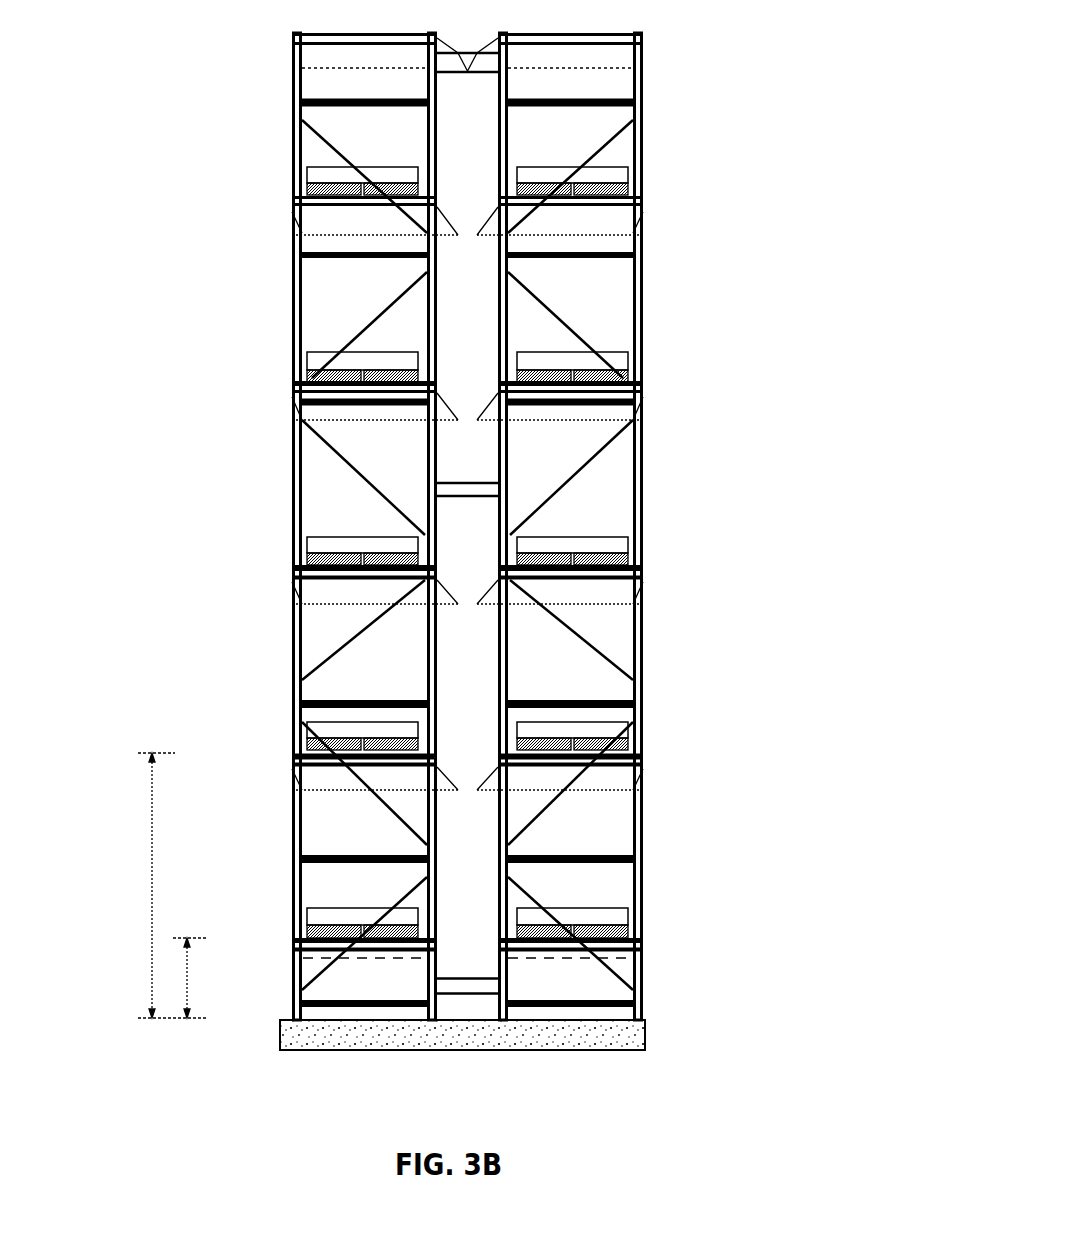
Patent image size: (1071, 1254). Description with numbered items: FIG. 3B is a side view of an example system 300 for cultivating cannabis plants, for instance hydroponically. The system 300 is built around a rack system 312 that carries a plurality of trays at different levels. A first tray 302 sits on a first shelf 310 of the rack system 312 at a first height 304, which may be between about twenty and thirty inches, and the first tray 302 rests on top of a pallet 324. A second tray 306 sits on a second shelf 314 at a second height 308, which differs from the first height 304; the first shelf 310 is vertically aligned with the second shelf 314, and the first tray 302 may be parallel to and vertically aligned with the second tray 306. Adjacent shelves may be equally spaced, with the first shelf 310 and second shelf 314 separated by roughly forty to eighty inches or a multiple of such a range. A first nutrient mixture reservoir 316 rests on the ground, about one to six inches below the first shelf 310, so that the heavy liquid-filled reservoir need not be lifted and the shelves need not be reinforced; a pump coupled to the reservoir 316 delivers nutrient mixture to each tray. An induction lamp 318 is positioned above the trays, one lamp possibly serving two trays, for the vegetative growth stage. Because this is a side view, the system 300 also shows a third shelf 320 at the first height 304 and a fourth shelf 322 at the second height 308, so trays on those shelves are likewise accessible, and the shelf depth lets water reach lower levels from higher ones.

The system 300 is at (85, 108).
The first tray 302 is at (618, 932).
The first height 304 is at (170, 967).
The second tray 306 is at (610, 740).
The second height 308 is at (150, 780).
The first shelf 310 is at (630, 947).
The rack system 312 is at (643, 35).
The second shelf 314 is at (615, 755).
The first nutrient mixture reservoir 316 is at (620, 1012).
The induction lamp 318 is at (622, 222).
The third shelf 320 is at (293, 942).
The fourth shelf 322 is at (293, 760).
The pallet 324 is at (630, 932).